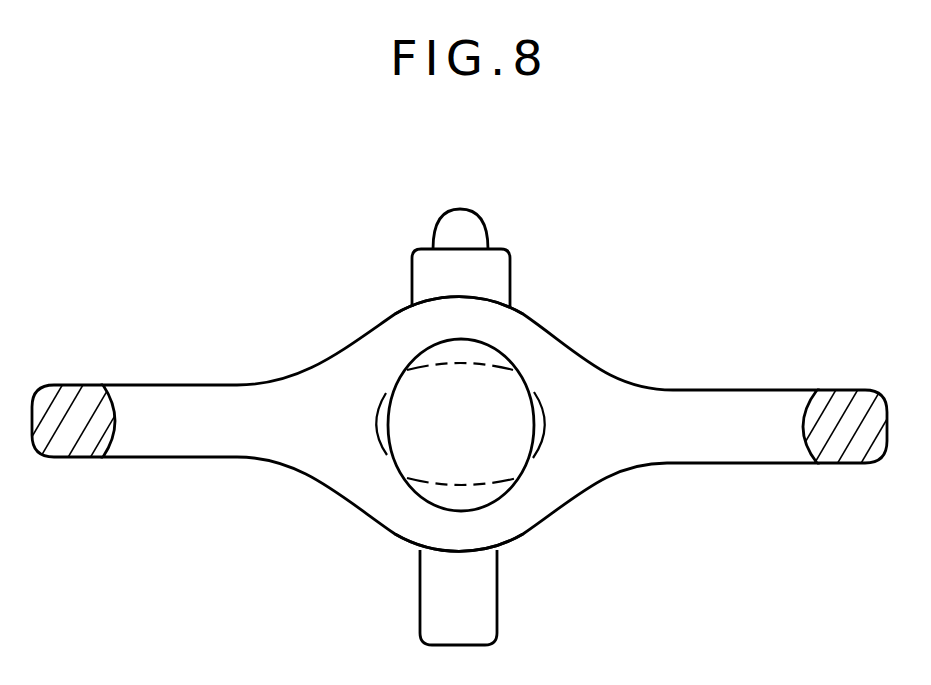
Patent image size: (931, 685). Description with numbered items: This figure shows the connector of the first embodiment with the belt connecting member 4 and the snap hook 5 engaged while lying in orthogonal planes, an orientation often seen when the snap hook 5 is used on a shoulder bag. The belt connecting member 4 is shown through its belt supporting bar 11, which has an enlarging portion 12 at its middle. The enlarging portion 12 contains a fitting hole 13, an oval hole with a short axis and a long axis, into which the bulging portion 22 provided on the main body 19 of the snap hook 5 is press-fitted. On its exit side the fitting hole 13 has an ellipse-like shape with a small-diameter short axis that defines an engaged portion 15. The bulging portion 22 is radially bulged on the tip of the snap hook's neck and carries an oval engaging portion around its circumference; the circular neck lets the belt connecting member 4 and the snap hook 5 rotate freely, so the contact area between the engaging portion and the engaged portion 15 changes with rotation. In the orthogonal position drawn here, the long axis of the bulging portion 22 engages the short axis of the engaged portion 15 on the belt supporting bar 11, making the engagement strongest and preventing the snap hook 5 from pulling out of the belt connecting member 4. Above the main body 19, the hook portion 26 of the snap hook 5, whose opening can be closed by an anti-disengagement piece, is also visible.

The belt connecting member 4 is at (217, 385).
The snap hook 5 is at (505, 248).
The belt supporting bar 11 is at (743, 415).
The enlarging portion 12 is at (383, 322).
The fitting hole 13 is at (543, 423).
The engaged portion 15 is at (473, 497).
The main body 19 is at (448, 615).
The bulging portion 22 is at (482, 400).
The hook portion 26 is at (457, 223).